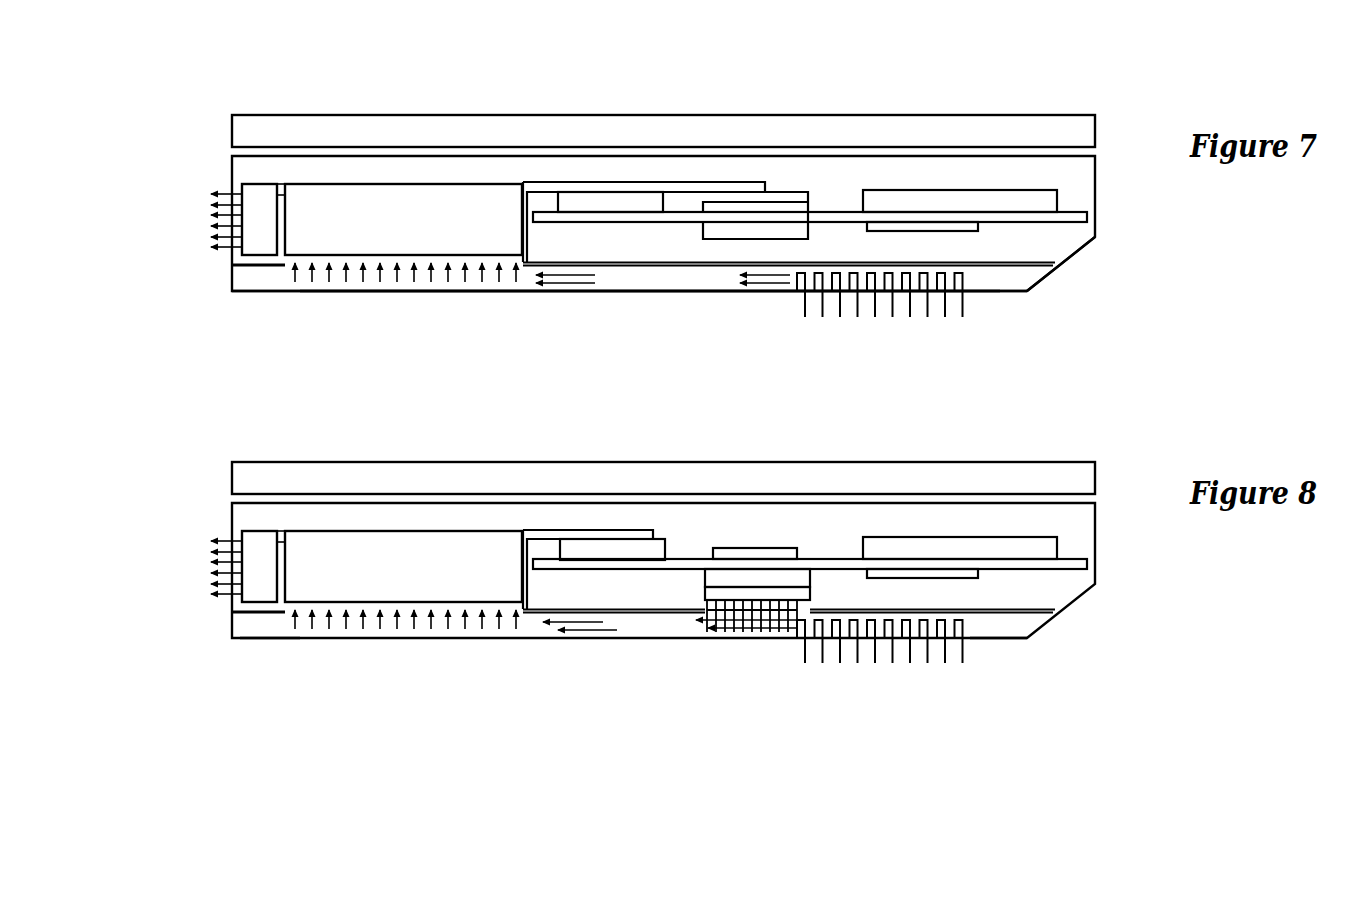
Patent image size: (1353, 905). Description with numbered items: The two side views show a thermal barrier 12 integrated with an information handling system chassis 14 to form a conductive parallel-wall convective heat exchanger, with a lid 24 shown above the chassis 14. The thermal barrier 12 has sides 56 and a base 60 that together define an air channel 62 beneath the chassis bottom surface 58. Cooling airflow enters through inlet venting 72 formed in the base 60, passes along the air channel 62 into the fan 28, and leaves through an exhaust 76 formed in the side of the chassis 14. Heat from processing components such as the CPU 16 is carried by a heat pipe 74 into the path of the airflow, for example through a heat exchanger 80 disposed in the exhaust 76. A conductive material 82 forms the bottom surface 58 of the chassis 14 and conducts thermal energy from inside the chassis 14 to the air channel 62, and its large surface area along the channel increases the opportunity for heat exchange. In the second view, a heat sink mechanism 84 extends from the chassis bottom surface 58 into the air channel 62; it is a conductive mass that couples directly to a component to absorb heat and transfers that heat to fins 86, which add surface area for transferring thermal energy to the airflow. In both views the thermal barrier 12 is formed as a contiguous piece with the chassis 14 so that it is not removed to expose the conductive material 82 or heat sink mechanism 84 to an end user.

In FIG. 7, the thermal barrier 12 is at (522, 295).
In FIG. 8, the thermal barrier 12 is at (268, 645).
In FIG. 7, the information handling system chassis 14 is at (1100, 190).
In FIG. 8, the information handling system chassis 14 is at (1101, 536).
In FIG. 7, the CPU 16 is at (610, 199).
In FIG. 8, the CPU 16 is at (602, 549).
In FIG. 7, the lid 24 is at (663, 131).
In FIG. 8, the lid 24 is at (663, 478).
In FIG. 7, the cooling fan 28 is at (403, 233).
In FIG. 8, the cooling fan 28 is at (403, 580).
In FIG. 7, the sides 56 is at (1048, 279).
In FIG. 7, the bottom surface 58 is at (1018, 257).
In FIG. 8, the bottom surface 58 is at (992, 618).
In FIG. 7, the base 60 is at (983, 294).
In FIG. 7, the air channel 62 is at (663, 276).
In FIG. 8, the air channel 62 is at (578, 639).
In FIG. 7, the inlet venting 72 is at (880, 308).
In FIG. 8, the inlet venting 72 is at (880, 655).
In FIG. 7, the heat pipe 74 is at (548, 179).
In FIG. 8, the heat pipe 74 is at (543, 527).
In FIG. 7, the exhaust 76 is at (201, 229).
In FIG. 8, the exhaust 76 is at (192, 556).
In FIG. 7, the heat exchanger 80 is at (258, 263).
In FIG. 8, the heat exchanger 80 is at (263, 528).
In FIG. 7, the conductive material 82 is at (823, 257).
In FIG. 8, the heat sink mechanism 84 is at (746, 693).
In FIG. 8, the fins 86 is at (763, 636).